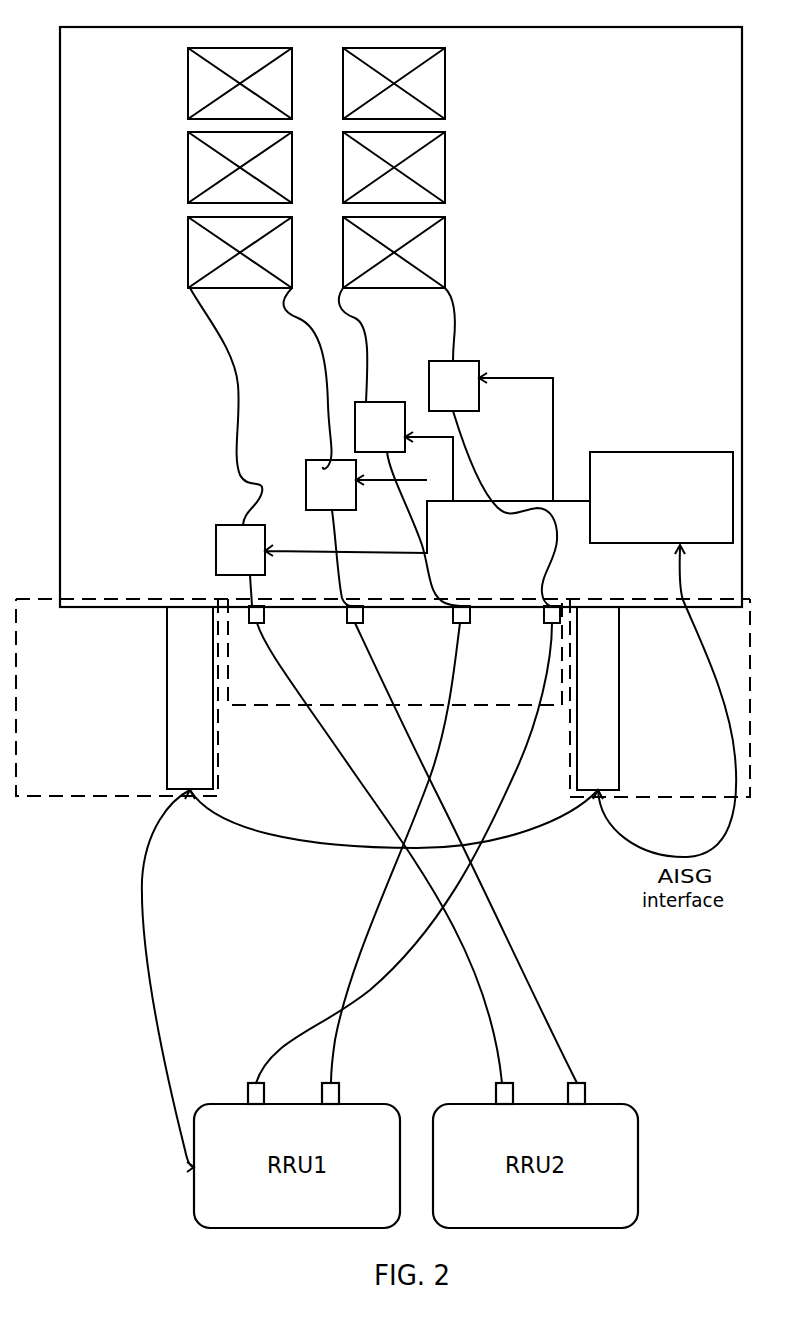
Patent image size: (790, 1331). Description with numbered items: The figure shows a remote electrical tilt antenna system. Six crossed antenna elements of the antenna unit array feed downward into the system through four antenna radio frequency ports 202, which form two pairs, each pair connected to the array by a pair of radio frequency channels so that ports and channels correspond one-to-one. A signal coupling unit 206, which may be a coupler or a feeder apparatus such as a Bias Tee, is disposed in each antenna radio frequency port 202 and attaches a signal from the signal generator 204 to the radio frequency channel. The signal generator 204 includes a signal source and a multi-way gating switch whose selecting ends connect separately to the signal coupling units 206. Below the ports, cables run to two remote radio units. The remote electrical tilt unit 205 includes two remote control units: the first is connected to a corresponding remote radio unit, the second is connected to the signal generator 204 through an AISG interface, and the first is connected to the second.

The antenna radio frequency port 202 is at (395, 652).
The signal generator 204 is at (661, 497).
The remote electrical tilt unit 205 is at (383, 698).
The signal coupling unit 206 is at (401, 317).